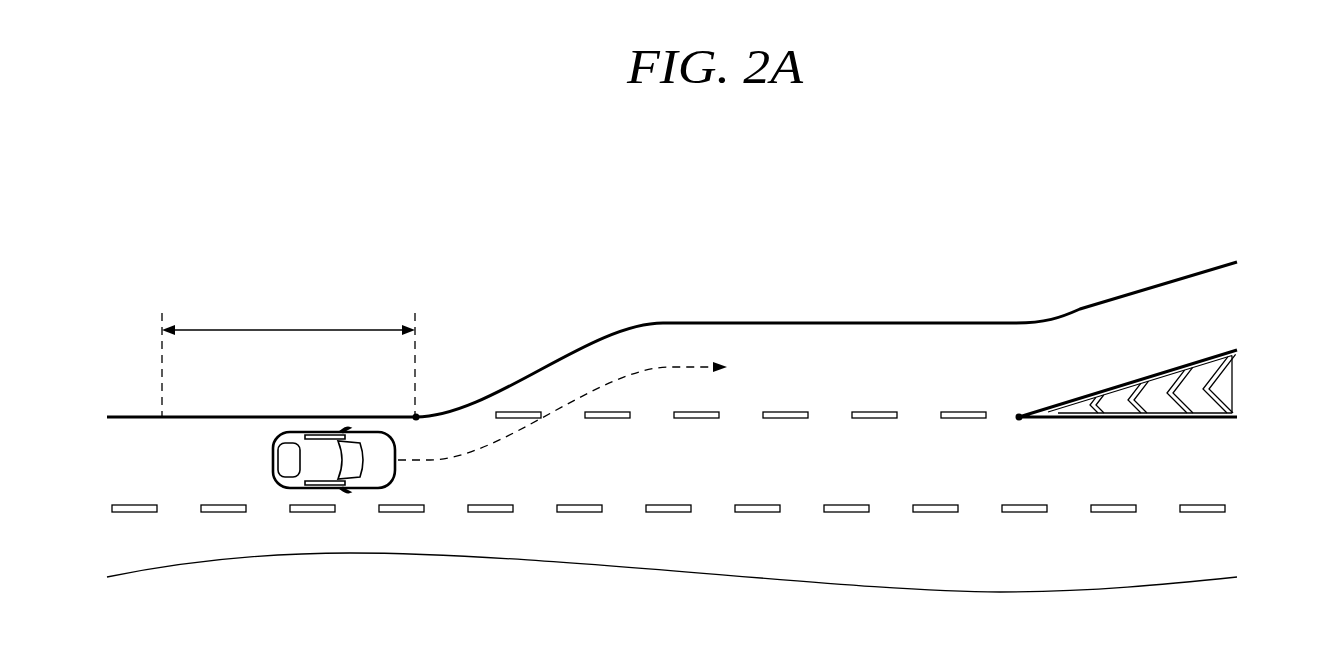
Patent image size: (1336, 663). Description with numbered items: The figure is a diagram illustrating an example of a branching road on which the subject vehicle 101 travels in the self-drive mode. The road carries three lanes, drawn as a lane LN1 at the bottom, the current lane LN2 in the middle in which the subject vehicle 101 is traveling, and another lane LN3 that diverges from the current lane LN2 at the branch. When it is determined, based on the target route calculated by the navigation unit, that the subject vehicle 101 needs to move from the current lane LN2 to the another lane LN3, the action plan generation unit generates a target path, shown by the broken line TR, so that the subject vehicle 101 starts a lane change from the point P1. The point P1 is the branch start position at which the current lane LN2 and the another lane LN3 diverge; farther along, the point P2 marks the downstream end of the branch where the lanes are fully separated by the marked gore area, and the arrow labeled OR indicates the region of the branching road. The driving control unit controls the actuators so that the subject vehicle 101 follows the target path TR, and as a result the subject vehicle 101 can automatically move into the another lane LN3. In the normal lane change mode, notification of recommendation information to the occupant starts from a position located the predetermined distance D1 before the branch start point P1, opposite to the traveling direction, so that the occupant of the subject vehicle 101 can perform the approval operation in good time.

The subject vehicle 101 is at (273, 460).
The point P1 is at (418, 414).
The lane merge end point P2 is at (1019, 416).
The broken line TR is at (689, 366).
The predetermined distance D1 is at (288, 359).
The oncoming/adjacent region OR is at (1036, 214).
The lane 1 LN1 is at (1197, 557).
The current lane LN2 is at (1197, 467).
The another lane LN3 is at (1197, 317).